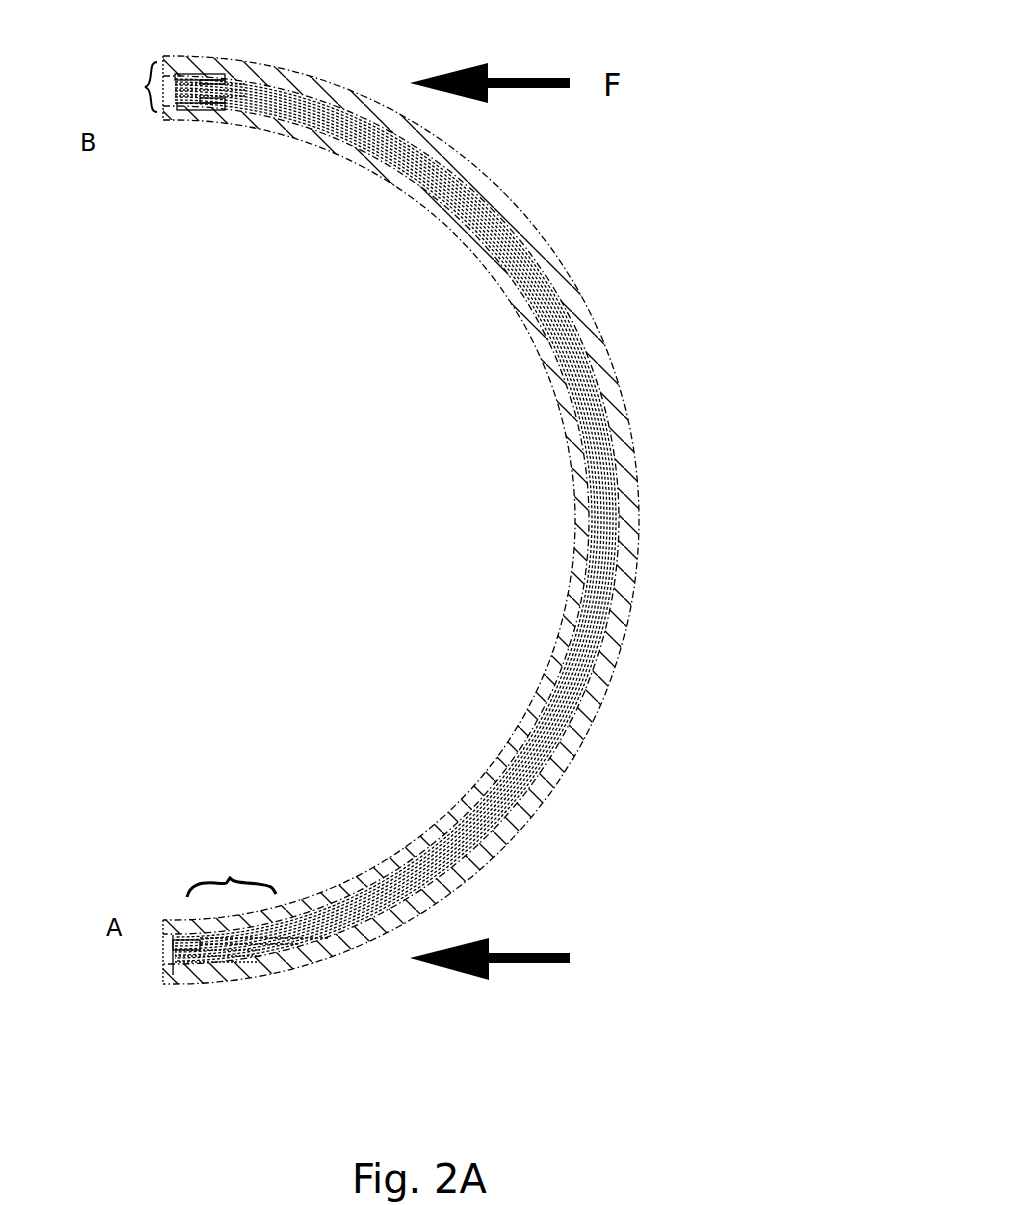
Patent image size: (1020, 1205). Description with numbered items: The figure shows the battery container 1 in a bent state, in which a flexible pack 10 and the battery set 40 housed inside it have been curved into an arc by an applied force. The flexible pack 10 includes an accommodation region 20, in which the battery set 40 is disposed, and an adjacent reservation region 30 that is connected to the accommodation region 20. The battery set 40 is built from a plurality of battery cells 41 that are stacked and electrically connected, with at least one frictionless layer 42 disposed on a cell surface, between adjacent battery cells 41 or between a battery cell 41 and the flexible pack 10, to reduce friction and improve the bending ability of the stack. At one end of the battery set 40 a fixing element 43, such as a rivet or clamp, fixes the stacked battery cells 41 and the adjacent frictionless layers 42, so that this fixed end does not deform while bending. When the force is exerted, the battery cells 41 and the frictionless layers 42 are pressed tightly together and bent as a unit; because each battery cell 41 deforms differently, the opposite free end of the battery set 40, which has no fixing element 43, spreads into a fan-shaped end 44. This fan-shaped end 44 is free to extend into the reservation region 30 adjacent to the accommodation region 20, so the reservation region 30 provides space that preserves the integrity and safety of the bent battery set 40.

The battery container 1 is at (445, 544).
The flexible pack 10 is at (440, 148).
The accommodation region 20 is at (237, 103).
The reservation region 30 is at (193, 952).
The battery set 40 is at (127, 87).
The battery cells 41 is at (287, 948).
The frictionless layer 42 is at (263, 950).
The fixing element 43 is at (205, 77).
The fan-shaped end 44 is at (231, 864).